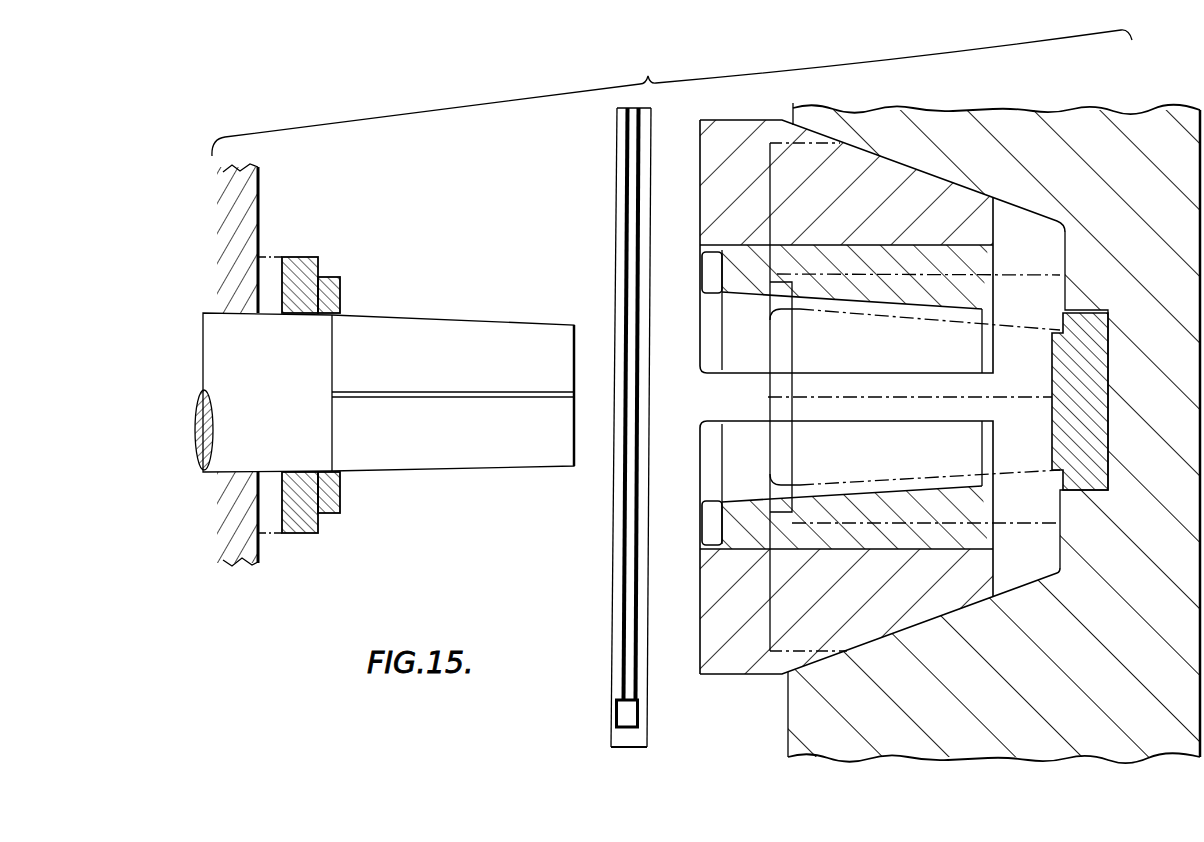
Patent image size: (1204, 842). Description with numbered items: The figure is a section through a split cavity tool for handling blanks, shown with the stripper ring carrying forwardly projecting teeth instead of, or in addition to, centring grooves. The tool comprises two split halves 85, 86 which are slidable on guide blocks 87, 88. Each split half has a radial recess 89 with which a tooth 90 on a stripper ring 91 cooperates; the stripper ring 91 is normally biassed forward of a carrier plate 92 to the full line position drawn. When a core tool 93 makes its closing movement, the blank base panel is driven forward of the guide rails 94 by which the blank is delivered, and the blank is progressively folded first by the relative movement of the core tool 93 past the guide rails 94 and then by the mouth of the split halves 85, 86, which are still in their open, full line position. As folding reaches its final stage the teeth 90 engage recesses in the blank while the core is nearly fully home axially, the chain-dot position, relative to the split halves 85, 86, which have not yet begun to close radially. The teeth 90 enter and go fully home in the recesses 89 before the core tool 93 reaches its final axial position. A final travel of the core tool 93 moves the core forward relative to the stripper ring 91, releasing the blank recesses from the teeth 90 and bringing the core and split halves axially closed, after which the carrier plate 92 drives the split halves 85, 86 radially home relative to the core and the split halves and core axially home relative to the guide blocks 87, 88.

The split half 85 is at (712, 197).
The split half 86 is at (710, 588).
The guide block 87 is at (1063, 177).
The guide block 88 is at (920, 692).
The radial recess 89 is at (702, 260).
The tooth 90 is at (338, 294).
The stripper ring 91 is at (303, 263).
The carrier plate 92 is at (259, 203).
The core tool 93 is at (482, 322).
The guide rail 94 is at (615, 262).